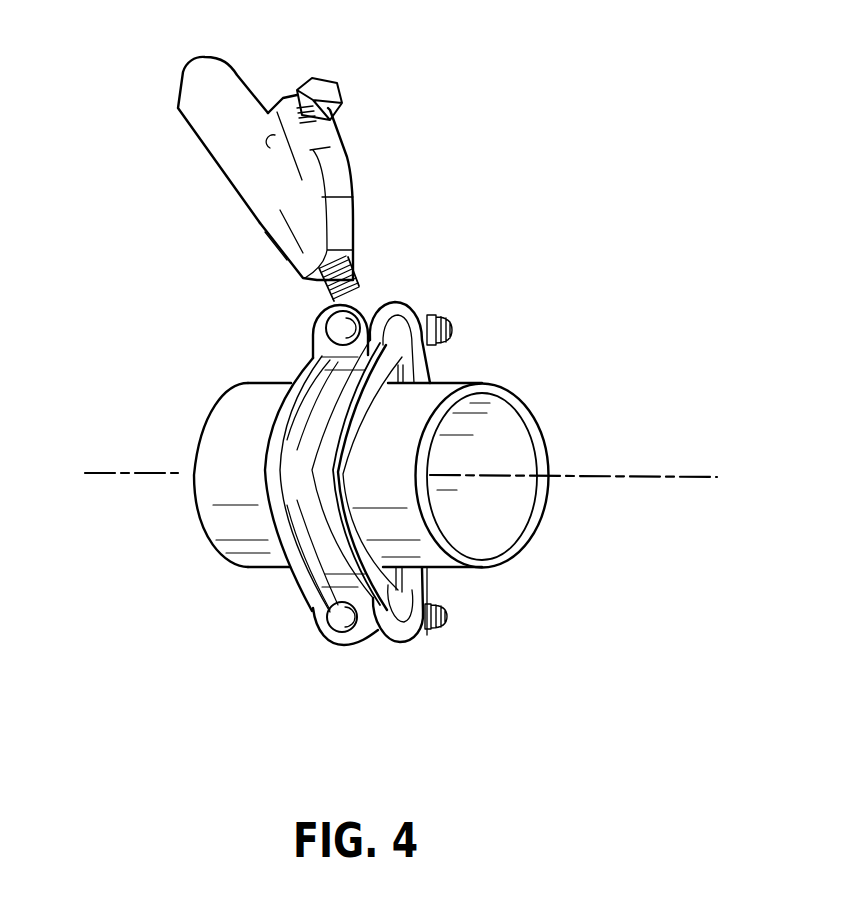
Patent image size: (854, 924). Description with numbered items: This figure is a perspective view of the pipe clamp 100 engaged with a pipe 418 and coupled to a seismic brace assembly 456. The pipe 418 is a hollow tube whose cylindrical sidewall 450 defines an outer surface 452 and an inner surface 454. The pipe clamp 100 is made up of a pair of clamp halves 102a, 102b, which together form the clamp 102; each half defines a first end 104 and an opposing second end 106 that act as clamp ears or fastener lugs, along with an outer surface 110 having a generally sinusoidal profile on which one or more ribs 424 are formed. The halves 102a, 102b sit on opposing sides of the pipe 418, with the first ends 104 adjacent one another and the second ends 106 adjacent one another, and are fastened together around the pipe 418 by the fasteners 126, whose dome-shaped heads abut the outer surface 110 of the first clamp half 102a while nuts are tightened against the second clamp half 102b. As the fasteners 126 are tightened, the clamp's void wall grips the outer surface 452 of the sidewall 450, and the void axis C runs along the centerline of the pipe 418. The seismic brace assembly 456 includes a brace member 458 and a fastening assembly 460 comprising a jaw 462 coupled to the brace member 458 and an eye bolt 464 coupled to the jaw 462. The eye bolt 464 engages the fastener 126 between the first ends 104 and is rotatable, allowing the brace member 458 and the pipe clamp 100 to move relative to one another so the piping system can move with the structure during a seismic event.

The pipe clamp 100 is at (417, 666).
The clamp halves 102 is at (458, 593).
The first clamp half 102a is at (302, 648).
The second clamp half 102b is at (463, 345).
The first end 104 is at (437, 365).
The second end 106 is at (437, 577).
The outer surface 110 is at (225, 525).
The fasteners 126 is at (446, 325).
The pipe 418 is at (544, 402).
The ribs 424 is at (307, 370).
The cylindrical sidewall 450 is at (545, 450).
The outer surface 452 is at (217, 446).
The inner surface 454 is at (513, 505).
The seismic brace assembly 456 is at (389, 101).
The brace member 458 is at (246, 82).
The fastening assembly 460 is at (363, 230).
The jaw 462 is at (351, 168).
The eye bolt 464 is at (353, 284).